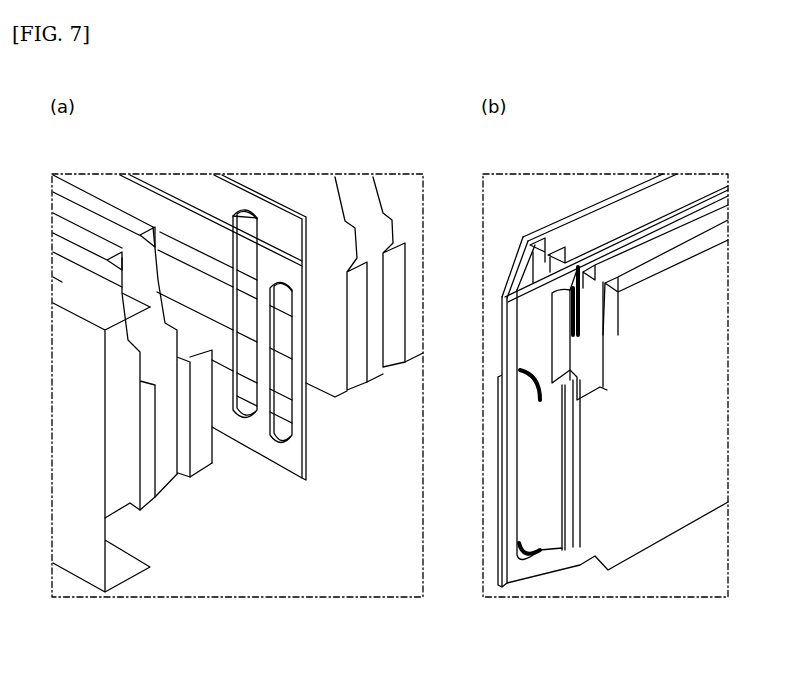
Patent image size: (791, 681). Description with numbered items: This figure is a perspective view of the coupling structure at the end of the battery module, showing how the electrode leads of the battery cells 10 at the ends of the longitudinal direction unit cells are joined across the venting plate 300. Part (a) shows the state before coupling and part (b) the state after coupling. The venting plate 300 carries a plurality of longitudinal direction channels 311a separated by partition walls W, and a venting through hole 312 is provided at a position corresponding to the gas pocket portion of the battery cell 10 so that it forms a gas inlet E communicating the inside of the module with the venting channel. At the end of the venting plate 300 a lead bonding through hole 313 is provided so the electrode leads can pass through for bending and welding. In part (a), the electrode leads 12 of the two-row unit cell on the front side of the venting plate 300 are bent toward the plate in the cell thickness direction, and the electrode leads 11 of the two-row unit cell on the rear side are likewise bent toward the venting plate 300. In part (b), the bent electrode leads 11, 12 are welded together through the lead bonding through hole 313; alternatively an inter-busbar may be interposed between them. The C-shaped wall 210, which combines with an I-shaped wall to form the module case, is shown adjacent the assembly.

The battery cell 10 is at (68, 230).
The electrode lead 11 is at (353, 372).
The electrode lead 12 is at (165, 478).
The C-shaped wall 210 is at (83, 543).
The venting plate 300 is at (281, 191).
The longitudinal direction channel 311a is at (143, 203).
The venting through hole 312 is at (246, 408).
The lead bonding through hole 313 is at (282, 424).
The partition wall W is at (186, 203).
The gas inlet E is at (243, 262).